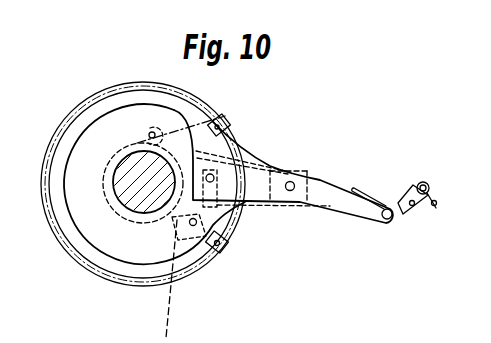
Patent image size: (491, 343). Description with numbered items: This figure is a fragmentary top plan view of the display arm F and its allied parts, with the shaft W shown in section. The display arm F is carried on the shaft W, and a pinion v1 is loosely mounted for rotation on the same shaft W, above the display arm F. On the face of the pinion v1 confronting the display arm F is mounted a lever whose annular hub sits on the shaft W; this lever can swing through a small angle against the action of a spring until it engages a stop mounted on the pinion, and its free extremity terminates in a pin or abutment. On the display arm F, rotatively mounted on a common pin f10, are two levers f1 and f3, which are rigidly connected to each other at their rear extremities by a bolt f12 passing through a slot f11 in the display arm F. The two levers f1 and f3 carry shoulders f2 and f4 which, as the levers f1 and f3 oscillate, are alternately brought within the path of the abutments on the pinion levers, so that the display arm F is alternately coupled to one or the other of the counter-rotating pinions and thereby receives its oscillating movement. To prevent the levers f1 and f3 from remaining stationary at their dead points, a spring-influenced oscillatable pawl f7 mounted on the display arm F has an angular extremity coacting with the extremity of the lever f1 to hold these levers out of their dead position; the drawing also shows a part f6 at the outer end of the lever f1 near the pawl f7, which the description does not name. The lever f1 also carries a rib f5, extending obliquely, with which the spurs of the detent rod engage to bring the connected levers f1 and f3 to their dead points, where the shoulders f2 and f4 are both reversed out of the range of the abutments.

The pinion v1 is at (134, 84).
The display arm F is at (148, 189).
The shaft W is at (117, 201).
The lever f1 is at (325, 204).
The shoulder f2 is at (240, 150).
The lever f3 is at (242, 158).
The shoulder f4 is at (182, 262).
The rib f5 is at (366, 198).
The pin hole f6 is at (385, 220).
The pawl f7 is at (428, 206).
The pin f10 is at (290, 192).
The slot f11 is at (268, 162).
The bolt f12 is at (215, 178).